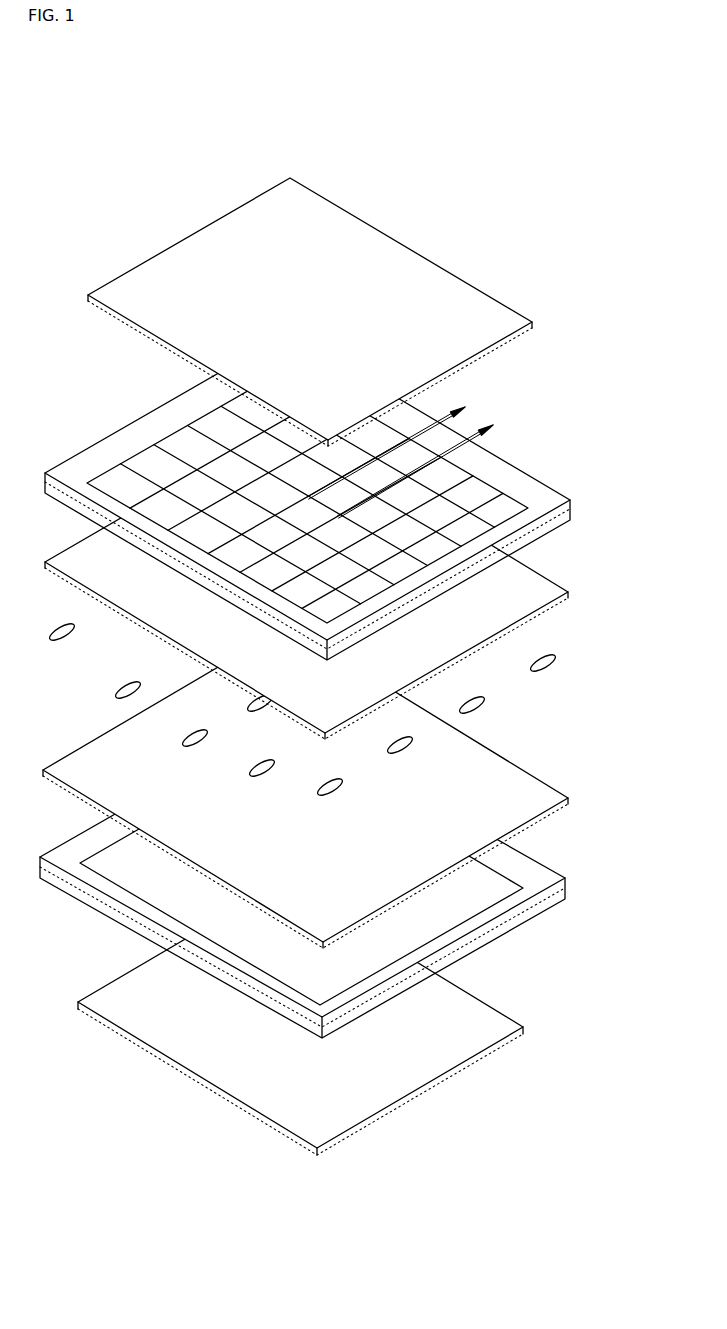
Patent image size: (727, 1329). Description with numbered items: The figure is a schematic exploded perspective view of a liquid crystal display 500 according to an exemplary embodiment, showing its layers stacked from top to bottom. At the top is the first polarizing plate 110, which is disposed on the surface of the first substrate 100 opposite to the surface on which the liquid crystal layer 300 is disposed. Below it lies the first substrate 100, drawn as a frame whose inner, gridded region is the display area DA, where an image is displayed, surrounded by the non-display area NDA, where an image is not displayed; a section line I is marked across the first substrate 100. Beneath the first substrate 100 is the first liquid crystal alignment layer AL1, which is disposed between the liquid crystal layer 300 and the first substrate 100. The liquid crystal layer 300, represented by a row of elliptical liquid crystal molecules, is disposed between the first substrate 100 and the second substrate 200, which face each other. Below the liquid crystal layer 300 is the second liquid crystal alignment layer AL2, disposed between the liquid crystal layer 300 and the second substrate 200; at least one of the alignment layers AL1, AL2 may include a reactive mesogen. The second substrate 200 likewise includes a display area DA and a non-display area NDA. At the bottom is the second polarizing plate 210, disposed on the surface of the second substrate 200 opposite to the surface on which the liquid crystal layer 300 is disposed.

The liquid crystal display 500 is at (407, 70).
The first polarizing plate 110 is at (533, 323).
The first substrate 100 is at (343, 662).
The display area DA is at (483, 495).
The non-display area NDA is at (535, 497).
The section line I-I' I is at (412, 452).
The first liquid crystal alignment layer AL1 is at (568, 595).
The liquid crystal layer 300 is at (580, 652).
The second liquid crystal alignment layer AL2 is at (568, 800).
The second substrate 200 is at (566, 889).
The second polarizing plate 210 is at (524, 1030).